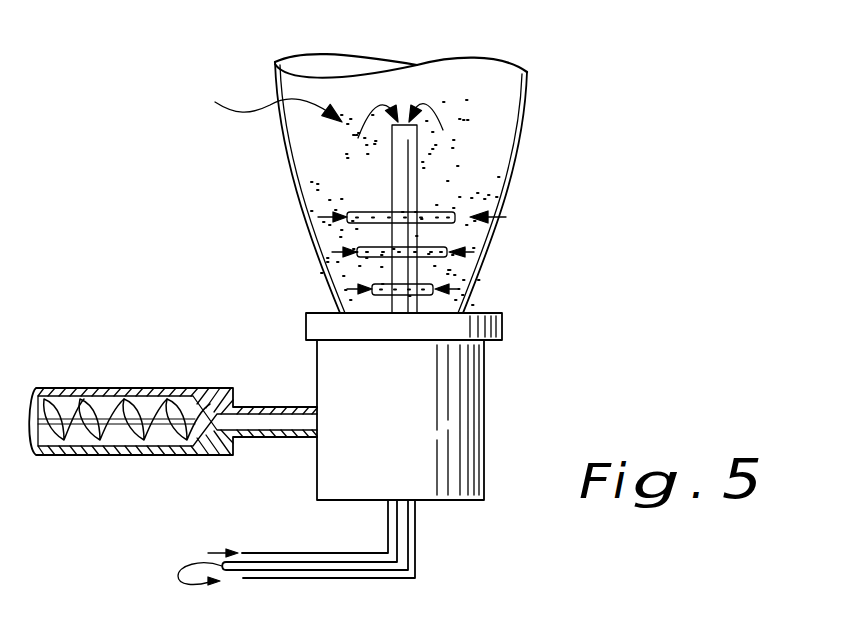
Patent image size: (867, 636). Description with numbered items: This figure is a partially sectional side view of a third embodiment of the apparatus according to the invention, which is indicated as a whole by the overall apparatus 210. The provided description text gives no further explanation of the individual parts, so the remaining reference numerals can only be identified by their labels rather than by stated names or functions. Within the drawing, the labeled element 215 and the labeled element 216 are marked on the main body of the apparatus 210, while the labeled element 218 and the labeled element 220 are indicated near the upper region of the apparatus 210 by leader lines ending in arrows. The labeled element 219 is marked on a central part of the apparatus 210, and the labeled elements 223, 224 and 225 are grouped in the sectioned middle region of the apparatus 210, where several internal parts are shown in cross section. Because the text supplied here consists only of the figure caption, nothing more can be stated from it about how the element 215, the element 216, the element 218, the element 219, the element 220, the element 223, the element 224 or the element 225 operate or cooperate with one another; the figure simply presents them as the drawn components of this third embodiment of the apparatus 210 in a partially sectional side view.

The coating apparatus 210 is at (590, 267).
The coating chamber vessel 215 is at (478, 94).
The housing 216 is at (472, 273).
The gas inlet flow 218 is at (266, 87).
The central feed tube 219 is at (397, 147).
The powder discharge flow 220 is at (400, 116).
The distribution plates 223 is at (382, 223).
The perforated plates 224 is at (423, 210).
The gas flow arrows 225 is at (493, 199).